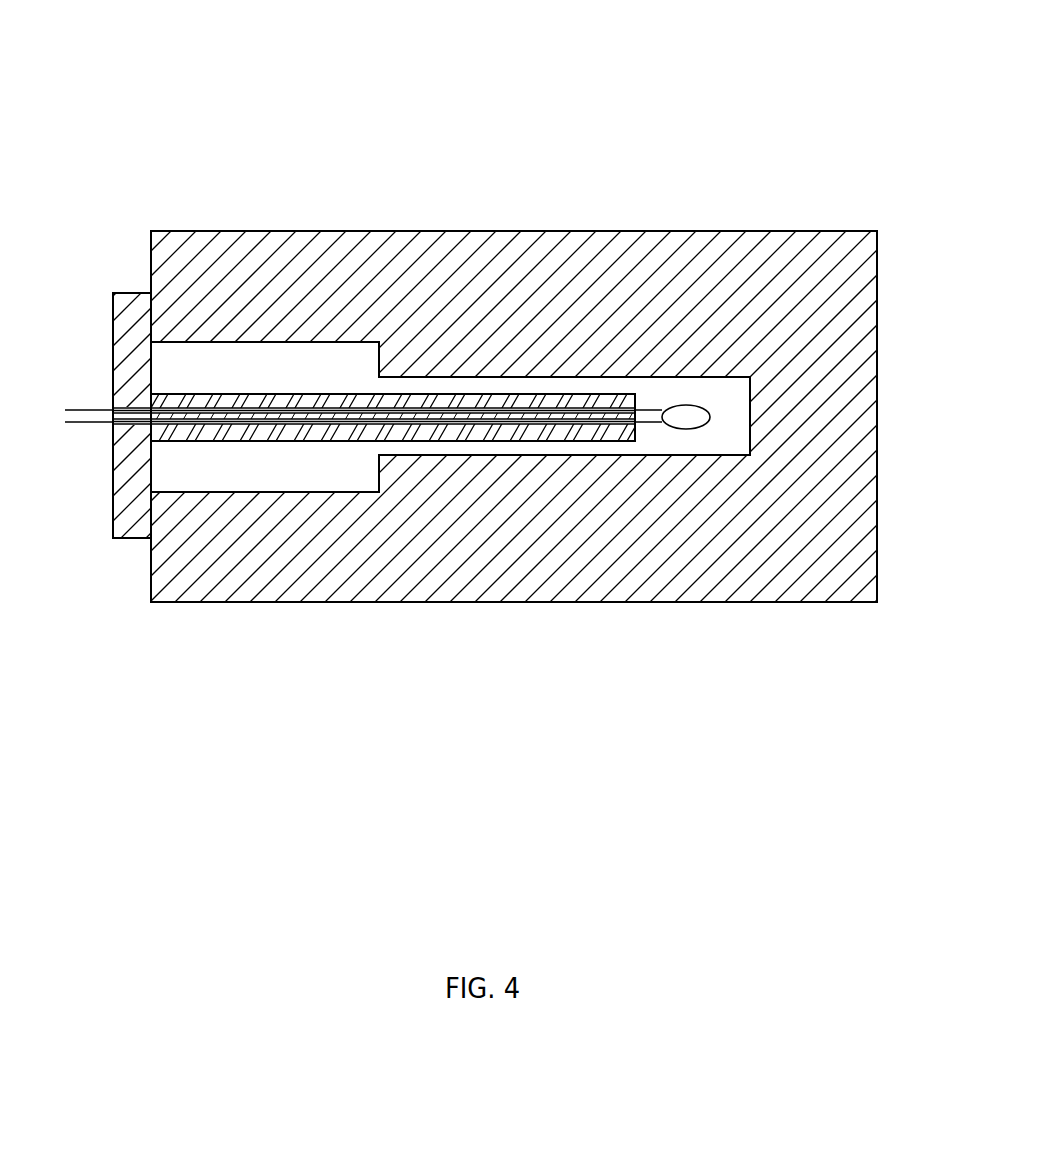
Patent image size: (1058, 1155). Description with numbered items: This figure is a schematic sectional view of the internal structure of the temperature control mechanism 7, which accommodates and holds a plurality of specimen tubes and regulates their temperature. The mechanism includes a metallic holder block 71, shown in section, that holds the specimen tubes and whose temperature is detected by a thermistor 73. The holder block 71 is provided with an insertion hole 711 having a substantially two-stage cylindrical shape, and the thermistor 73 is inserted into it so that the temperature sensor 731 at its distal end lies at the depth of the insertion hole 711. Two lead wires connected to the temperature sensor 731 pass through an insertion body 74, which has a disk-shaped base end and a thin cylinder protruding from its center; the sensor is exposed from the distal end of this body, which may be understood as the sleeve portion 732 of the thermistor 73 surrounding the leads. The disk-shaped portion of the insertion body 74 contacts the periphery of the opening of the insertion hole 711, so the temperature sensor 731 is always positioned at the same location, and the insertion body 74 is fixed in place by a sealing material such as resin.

The temperature control mechanism 7 is at (884, 106).
The holder block 71 is at (552, 604).
The insertion hole 711 is at (732, 441).
The thermistor 73 is at (673, 155).
The temperature sensor 731 is at (688, 407).
The ferrule 732 is at (649, 410).
The insertion body 74 is at (133, 293).